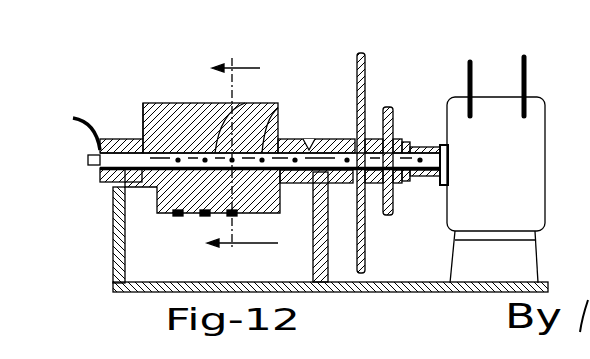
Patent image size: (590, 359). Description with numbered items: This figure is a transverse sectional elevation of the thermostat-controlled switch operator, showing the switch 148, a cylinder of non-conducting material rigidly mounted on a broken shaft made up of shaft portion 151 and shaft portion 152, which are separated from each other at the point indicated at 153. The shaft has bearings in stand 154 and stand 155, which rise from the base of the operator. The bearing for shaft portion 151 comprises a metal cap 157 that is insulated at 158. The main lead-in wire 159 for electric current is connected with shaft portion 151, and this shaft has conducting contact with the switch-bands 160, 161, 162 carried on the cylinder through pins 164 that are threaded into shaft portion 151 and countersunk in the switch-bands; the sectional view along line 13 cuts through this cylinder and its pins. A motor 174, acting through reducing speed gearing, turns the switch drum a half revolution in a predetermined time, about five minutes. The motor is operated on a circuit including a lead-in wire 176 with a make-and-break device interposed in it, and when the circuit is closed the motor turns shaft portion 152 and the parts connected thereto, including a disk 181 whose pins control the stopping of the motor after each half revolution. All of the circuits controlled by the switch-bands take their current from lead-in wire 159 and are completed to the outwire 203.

The section line 13- 13 is at (253, 157).
The switch 148 is at (178, 113).
The shaft portion 151 is at (146, 153).
The shaft portion 152 is at (322, 139).
The separation 153 is at (292, 139).
The stand 154 is at (113, 220).
The stand 155 is at (330, 250).
The metal cap 157 is at (100, 170).
The insulation 158 is at (104, 139).
The main lead-in wire 159 is at (80, 128).
The switch-band 160 is at (178, 215).
The switch-band 161 is at (206, 215).
The switch-band 162 is at (232, 216).
The pins 164 is at (215, 153).
The motor 174 is at (532, 134).
The lead-in wire 176 is at (527, 72).
The disk 181 is at (365, 70).
The outwire 203 is at (492, 44).